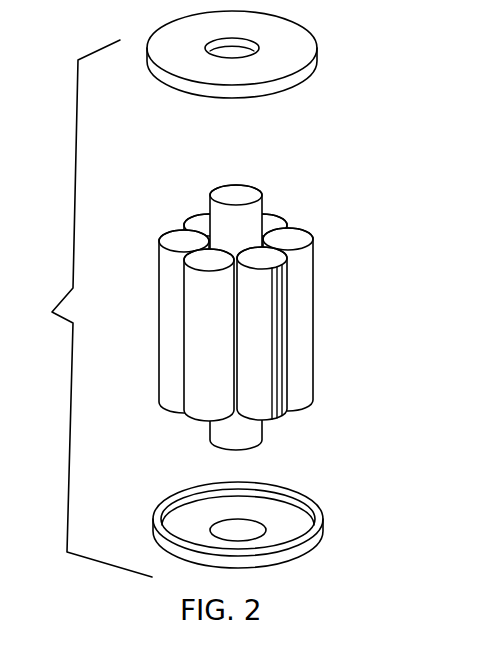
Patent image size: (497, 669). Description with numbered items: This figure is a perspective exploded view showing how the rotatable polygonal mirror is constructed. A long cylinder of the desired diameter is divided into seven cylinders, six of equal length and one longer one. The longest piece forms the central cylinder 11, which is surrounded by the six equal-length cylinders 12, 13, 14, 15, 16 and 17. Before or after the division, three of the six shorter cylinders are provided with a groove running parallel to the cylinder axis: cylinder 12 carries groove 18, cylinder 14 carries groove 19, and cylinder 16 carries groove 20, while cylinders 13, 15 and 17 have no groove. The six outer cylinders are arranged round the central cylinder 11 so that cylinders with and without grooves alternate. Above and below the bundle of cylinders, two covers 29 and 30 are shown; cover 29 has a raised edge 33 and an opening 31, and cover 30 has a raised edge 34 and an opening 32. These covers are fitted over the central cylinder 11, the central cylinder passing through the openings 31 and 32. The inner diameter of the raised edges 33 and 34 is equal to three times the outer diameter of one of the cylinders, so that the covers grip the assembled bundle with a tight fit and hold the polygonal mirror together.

The central cylinder 11 is at (237, 190).
The cylinder 12 is at (299, 292).
The cylinder 13 is at (307, 292).
The cylinder 14 is at (300, 342).
The cylinder 15 is at (194, 404).
The cylinder 16 is at (151, 321).
The cylinder 17 is at (191, 220).
The groove 18 is at (270, 219).
The groove 19 is at (274, 357).
The groove 20 is at (163, 241).
The cover 29 is at (260, 71).
The cover 30 is at (227, 517).
The opening 31 is at (252, 44).
The opening 32 is at (226, 532).
The raised edge 33 is at (265, 89).
The raised edge 34 is at (289, 499).